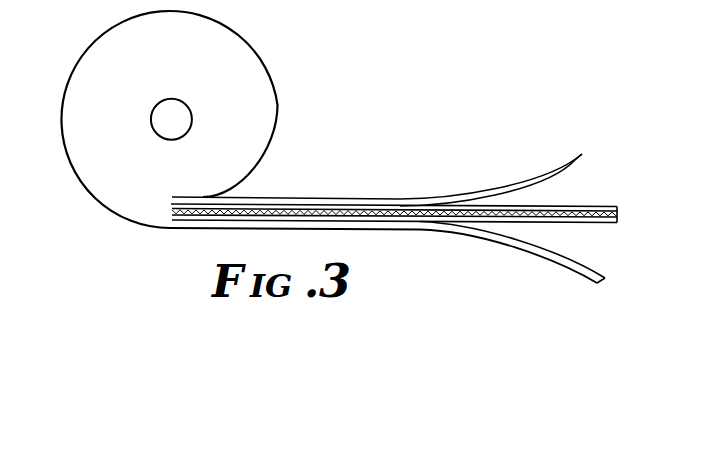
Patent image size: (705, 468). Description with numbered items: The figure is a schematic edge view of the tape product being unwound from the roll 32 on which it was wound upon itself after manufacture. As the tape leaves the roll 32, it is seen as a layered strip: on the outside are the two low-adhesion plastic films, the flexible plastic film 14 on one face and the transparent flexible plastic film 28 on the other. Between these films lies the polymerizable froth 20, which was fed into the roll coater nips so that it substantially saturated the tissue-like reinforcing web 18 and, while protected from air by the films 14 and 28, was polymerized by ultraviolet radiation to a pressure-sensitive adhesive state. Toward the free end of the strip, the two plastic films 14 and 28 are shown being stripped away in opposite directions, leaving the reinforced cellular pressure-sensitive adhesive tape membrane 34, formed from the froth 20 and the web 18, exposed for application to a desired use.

The flexible plastic film 14 is at (539, 248).
The tissue-like reinforcing web 18 is at (621, 214).
The polymerizable froth 20 is at (582, 206).
The transparent flexible plastic film 28 is at (550, 170).
The roll 32 is at (244, 62).
The reinforced cellular pressure-sensitive adhesive tape membrane 34 is at (422, 209).